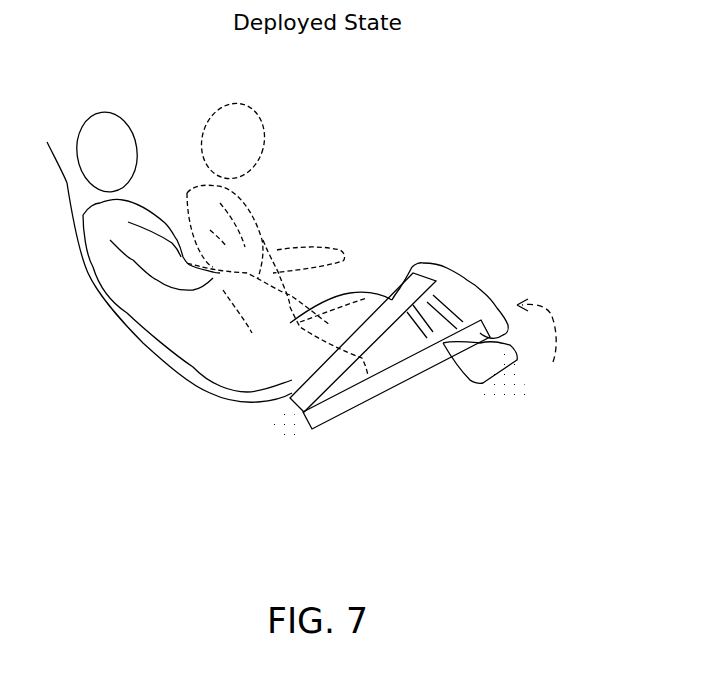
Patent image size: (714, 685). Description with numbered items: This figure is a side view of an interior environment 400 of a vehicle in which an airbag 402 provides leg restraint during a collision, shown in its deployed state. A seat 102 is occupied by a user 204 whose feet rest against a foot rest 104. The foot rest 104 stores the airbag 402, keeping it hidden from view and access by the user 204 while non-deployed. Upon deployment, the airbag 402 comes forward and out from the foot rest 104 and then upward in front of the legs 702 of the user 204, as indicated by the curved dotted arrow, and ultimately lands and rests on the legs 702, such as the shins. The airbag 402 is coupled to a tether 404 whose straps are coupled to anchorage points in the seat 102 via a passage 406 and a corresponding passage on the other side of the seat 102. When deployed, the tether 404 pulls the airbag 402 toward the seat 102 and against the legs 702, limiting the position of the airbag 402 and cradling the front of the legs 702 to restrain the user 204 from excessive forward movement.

The seat 102 is at (145, 348).
The foot rest 104 is at (533, 388).
The user 204 is at (123, 118).
The interior environment 400 is at (335, 555).
The airbag 402 is at (467, 290).
The tether 404 is at (403, 382).
The passage 406 is at (273, 431).
The legs 702 is at (380, 287).